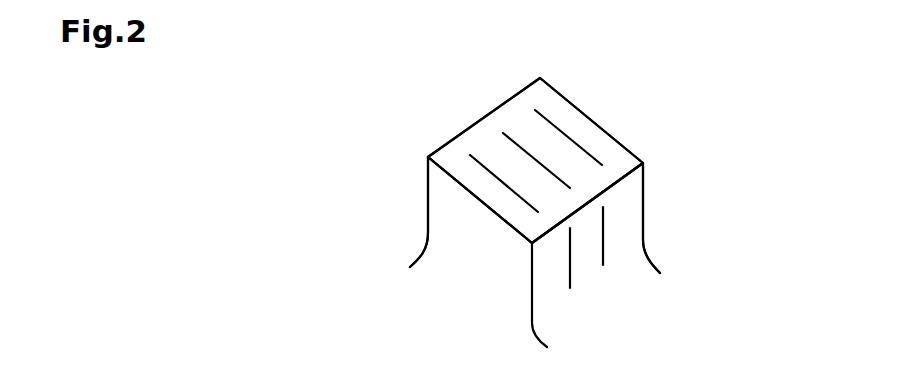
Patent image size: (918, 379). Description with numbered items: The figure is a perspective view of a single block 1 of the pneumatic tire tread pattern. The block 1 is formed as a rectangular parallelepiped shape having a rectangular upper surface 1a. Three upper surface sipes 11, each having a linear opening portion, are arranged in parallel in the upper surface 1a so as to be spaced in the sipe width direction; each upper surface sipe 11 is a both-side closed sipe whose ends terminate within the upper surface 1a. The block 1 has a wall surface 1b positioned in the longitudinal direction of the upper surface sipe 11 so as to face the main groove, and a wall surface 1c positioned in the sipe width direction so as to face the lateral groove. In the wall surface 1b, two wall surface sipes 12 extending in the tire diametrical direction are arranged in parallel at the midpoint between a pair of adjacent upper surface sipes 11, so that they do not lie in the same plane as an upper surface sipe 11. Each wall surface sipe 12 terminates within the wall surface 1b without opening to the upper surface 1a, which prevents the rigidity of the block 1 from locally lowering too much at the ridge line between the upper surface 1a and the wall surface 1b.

The block 1 is at (615, 138).
The upper surface 1a is at (503, 115).
The wall surface 1b is at (623, 225).
The wall surface 1c is at (438, 207).
The upper surface sipe 11 is at (505, 140).
The wall surface sipe 12 is at (570, 273).